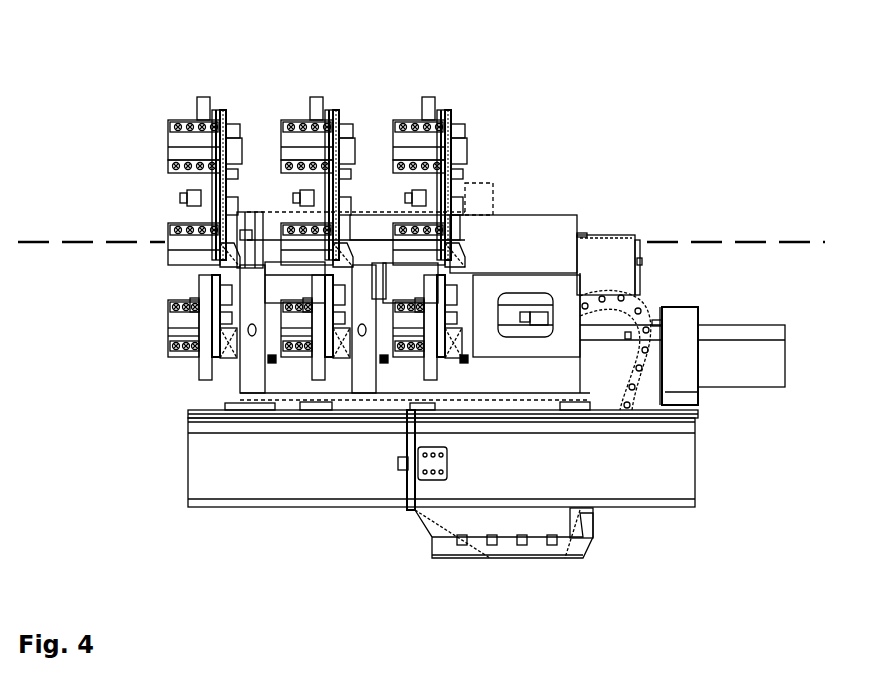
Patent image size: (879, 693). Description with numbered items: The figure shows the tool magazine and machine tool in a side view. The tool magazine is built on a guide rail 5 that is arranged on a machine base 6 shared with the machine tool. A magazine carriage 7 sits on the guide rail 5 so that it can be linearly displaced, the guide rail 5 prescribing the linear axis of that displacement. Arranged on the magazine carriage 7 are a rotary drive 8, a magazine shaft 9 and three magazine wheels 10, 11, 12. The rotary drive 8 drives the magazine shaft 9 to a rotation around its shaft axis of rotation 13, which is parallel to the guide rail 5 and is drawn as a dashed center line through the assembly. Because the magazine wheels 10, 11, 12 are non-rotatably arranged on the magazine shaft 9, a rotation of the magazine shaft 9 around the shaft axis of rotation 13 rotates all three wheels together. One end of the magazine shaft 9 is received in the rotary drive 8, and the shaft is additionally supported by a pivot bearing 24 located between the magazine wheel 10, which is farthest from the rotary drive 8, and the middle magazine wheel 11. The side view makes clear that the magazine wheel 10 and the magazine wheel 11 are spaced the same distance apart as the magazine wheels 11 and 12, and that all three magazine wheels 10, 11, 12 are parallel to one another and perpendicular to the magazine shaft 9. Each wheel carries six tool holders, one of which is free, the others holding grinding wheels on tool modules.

The guide rail 5 is at (190, 418).
The machine base 6 is at (652, 457).
The magazine carriage 7 is at (262, 387).
The rotary drive 8 is at (535, 230).
The magazine shaft 9 is at (352, 238).
The magazine wheel 10 is at (176, 213).
The magazine wheel 11 is at (296, 103).
The magazine wheel 12 is at (460, 100).
The shaft axis of rotation 13 is at (740, 242).
The pivot bearing 24 is at (250, 212).